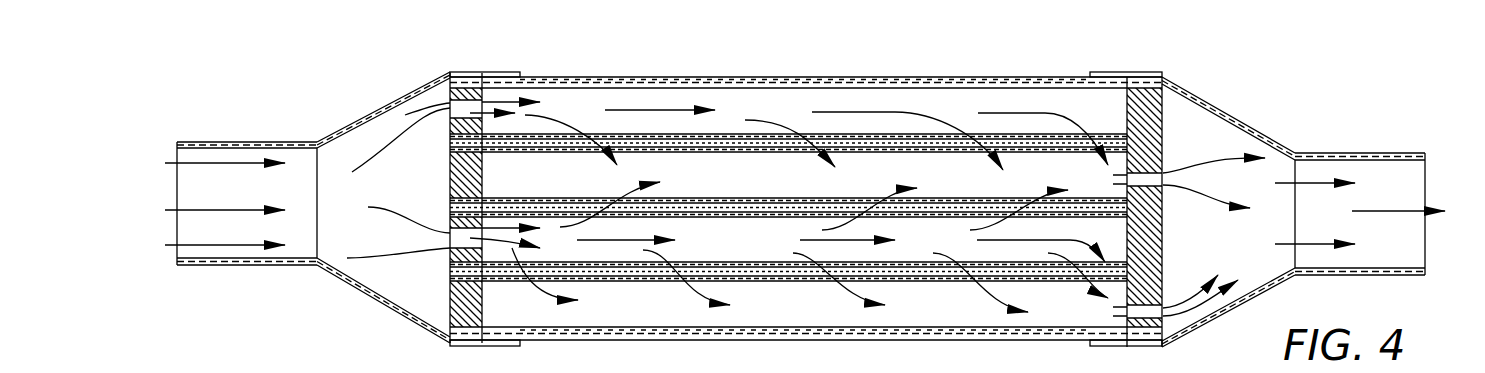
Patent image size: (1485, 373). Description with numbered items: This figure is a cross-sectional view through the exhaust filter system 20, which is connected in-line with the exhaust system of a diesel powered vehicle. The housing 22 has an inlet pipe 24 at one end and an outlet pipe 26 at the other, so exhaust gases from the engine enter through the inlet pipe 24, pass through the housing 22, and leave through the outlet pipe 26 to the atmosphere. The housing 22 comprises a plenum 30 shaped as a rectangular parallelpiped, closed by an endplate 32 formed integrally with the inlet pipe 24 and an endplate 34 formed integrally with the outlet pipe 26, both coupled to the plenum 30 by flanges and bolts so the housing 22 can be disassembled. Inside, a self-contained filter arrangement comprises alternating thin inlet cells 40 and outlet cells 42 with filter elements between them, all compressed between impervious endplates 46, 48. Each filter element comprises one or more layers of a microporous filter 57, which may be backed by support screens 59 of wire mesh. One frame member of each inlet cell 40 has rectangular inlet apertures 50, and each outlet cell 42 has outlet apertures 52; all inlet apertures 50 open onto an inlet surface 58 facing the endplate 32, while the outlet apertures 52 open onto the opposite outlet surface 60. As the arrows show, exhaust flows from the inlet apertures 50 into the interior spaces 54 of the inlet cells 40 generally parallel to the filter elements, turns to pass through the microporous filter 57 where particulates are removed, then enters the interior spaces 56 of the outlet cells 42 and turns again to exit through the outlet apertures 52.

The exhaust filter system 20 is at (268, 305).
The housing 22 is at (450, 343).
The inlet pipe 24 is at (250, 142).
The outlet pipe 26 is at (1372, 153).
The plenum 30 is at (900, 80).
The endplate 32 is at (372, 300).
The endplate 34 is at (1257, 128).
The inlet cells 40 is at (498, 74).
The outlet cells 42 is at (1170, 333).
The endplate 46 is at (740, 80).
The endplate 48 is at (845, 343).
The inlet apertures 50 is at (450, 103).
The outlet apertures 52 is at (1163, 173).
The interior spaces 54 is at (995, 103).
The interior spaces 56 is at (927, 315).
The microporous filter 57 is at (655, 134).
The inlet surface 58 is at (447, 253).
The support screens 59 is at (804, 152).
The outlet surface 60 is at (1163, 247).